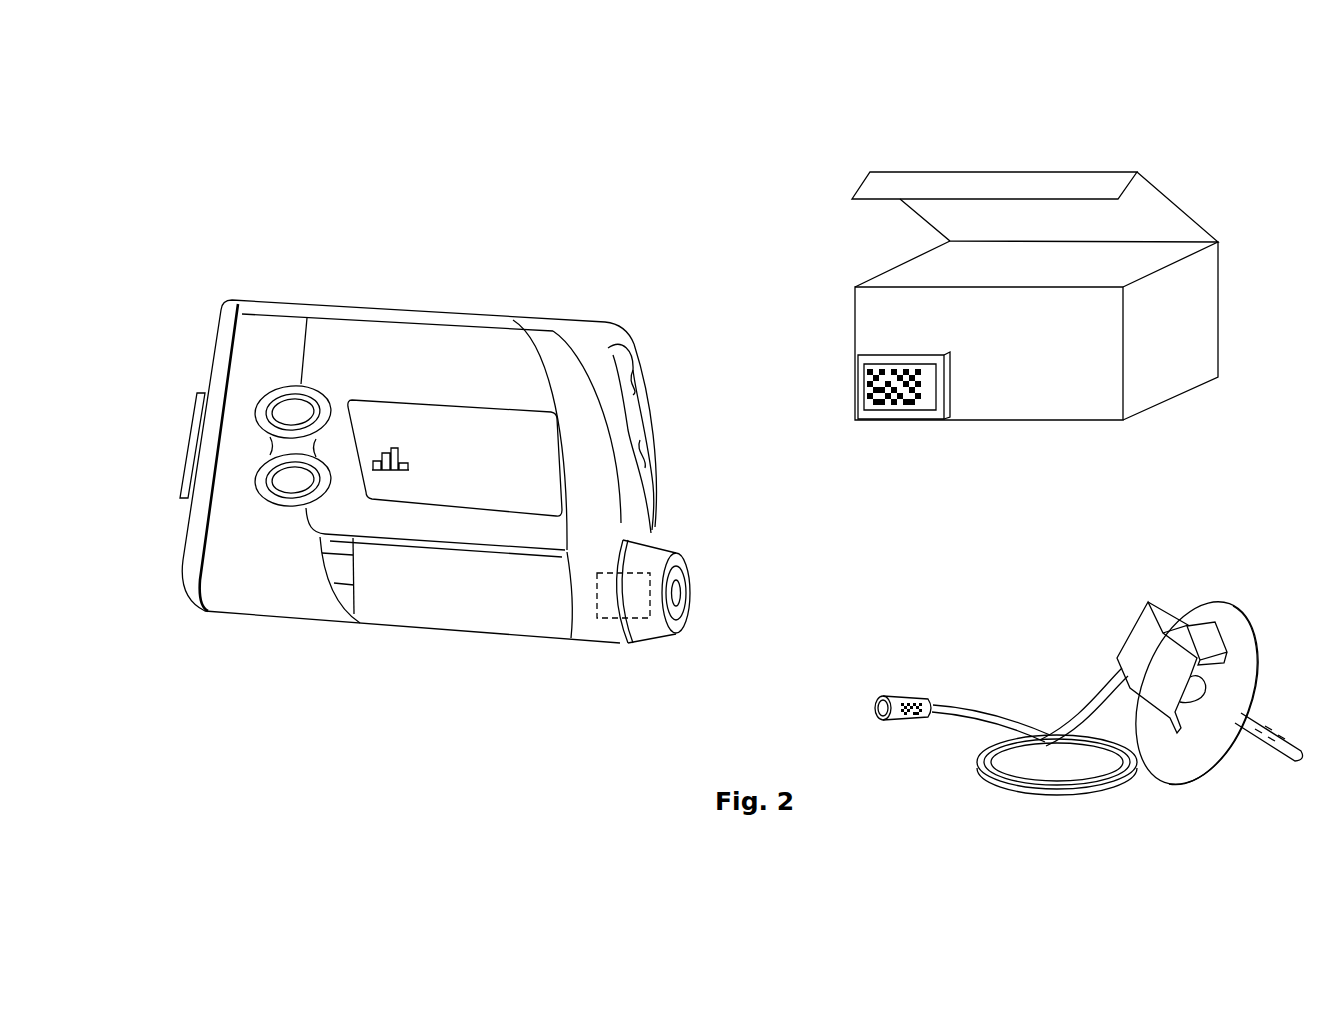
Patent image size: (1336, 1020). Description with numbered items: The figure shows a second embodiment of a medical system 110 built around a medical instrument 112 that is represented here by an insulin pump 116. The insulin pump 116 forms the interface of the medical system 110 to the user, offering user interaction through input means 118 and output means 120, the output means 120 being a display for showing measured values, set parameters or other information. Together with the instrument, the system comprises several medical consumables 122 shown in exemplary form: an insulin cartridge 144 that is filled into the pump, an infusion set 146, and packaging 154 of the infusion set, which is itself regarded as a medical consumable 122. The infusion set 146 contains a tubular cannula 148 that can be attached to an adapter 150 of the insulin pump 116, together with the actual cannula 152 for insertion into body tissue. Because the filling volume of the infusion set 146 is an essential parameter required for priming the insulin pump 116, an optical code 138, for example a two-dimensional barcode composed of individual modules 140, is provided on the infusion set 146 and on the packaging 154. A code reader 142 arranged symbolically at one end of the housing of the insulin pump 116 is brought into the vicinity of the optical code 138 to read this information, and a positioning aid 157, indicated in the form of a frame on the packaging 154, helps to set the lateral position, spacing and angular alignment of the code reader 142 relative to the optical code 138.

The medical system 110 is at (760, 208).
The medical instrument 112 is at (441, 453).
The insulin pump 116 is at (441, 453).
The input means 118 is at (283, 482).
The output means 120 is at (548, 483).
The medical consumable 122 is at (446, 632).
The optical code 138 is at (898, 418).
The modules 140 is at (885, 533).
The code reader 142 is at (187, 463).
The insulin cartridge 144 is at (453, 607).
The infusion set 146 is at (1103, 694).
The tubular cannula 148 is at (932, 713).
The adapter 150 is at (676, 593).
The cannula 152 is at (1265, 720).
The packaging 154 is at (1006, 443).
The positioning aid 157 is at (948, 395).